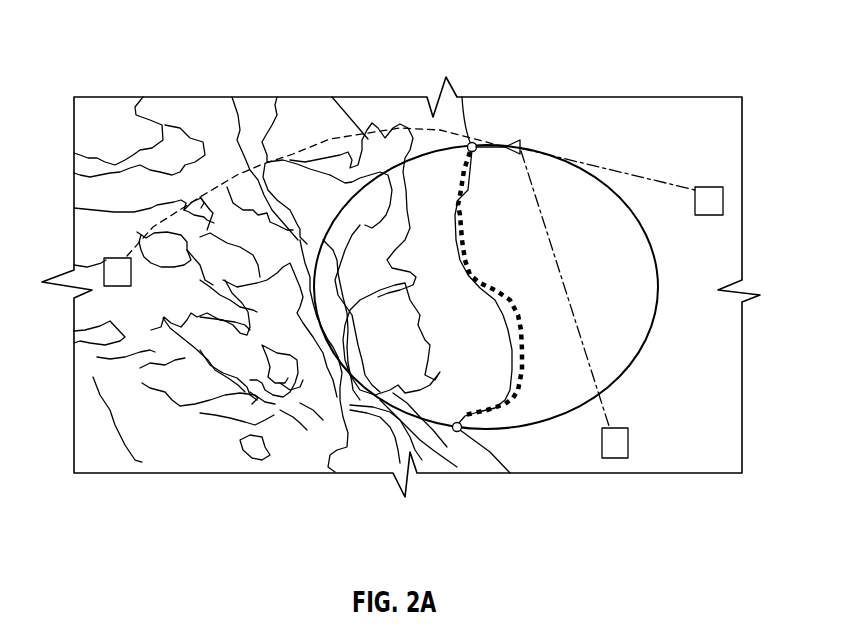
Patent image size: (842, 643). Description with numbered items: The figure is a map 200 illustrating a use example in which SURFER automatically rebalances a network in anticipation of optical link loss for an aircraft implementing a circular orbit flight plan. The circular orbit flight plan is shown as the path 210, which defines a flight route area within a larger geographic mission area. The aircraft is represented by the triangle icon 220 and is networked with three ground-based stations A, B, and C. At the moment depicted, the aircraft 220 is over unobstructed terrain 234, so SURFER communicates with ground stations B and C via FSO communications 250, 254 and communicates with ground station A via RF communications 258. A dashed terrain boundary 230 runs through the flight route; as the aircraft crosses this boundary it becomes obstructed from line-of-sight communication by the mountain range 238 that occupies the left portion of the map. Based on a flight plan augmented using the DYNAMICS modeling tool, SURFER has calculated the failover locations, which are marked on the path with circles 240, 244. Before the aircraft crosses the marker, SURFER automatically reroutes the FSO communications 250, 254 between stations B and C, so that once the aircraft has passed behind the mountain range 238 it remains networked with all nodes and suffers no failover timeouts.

The map 200 is at (135, 38).
The circular orbit flight plan path 210 is at (380, 398).
The aircraft triangle icon 220 is at (519, 142).
The dashed terrain boundary 230 is at (477, 118).
The unobstructed terrain 234 is at (672, 423).
The mountain range 238 is at (252, 397).
The failover location circle 240 is at (477, 143).
The failover location circle 244 is at (457, 432).
The FSO communications 250 is at (636, 172).
The FSO communications 254 is at (597, 403).
The RF communications 258 is at (263, 160).